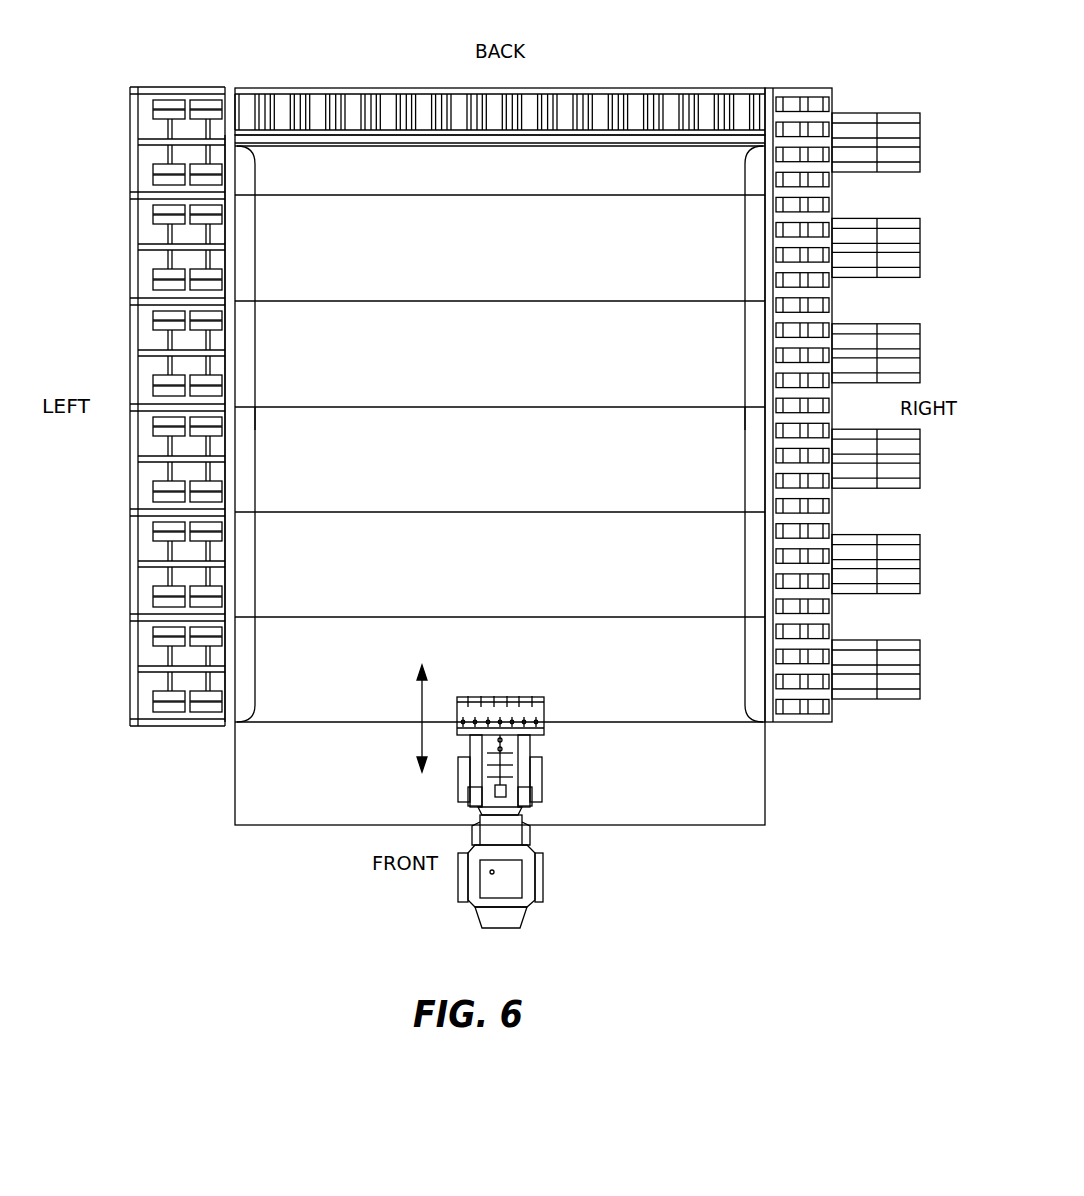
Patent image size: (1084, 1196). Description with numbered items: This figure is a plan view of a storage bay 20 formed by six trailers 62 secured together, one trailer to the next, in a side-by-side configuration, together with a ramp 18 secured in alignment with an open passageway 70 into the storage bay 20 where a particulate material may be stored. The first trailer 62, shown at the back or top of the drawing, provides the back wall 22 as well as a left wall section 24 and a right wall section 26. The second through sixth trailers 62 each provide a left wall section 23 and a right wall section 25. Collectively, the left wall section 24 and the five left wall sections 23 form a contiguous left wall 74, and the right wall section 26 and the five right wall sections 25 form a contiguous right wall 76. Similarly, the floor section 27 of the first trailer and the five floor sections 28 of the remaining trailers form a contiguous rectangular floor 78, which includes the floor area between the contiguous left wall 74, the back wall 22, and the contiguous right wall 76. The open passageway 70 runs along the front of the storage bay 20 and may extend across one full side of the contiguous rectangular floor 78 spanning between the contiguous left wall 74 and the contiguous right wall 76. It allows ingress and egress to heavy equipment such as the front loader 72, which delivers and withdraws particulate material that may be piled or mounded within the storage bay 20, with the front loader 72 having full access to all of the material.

The ramp 18 is at (235, 777).
The storage bay 20 is at (690, 842).
The back wall 22 is at (566, 147).
The left wall section 23 is at (237, 248).
The left wall section 24 is at (237, 167).
The right wall section 25 is at (762, 247).
The right wall section 26 is at (762, 165).
The floor section 27 is at (509, 184).
The floor section 28 is at (509, 262).
The trailer 62 is at (95, 142).
The open passageway 70 is at (420, 705).
The front loader 72 is at (543, 873).
The contiguous left wall 74 is at (257, 414).
The contiguous right wall 76 is at (743, 414).
The contiguous rectangular floor 78 is at (600, 236).